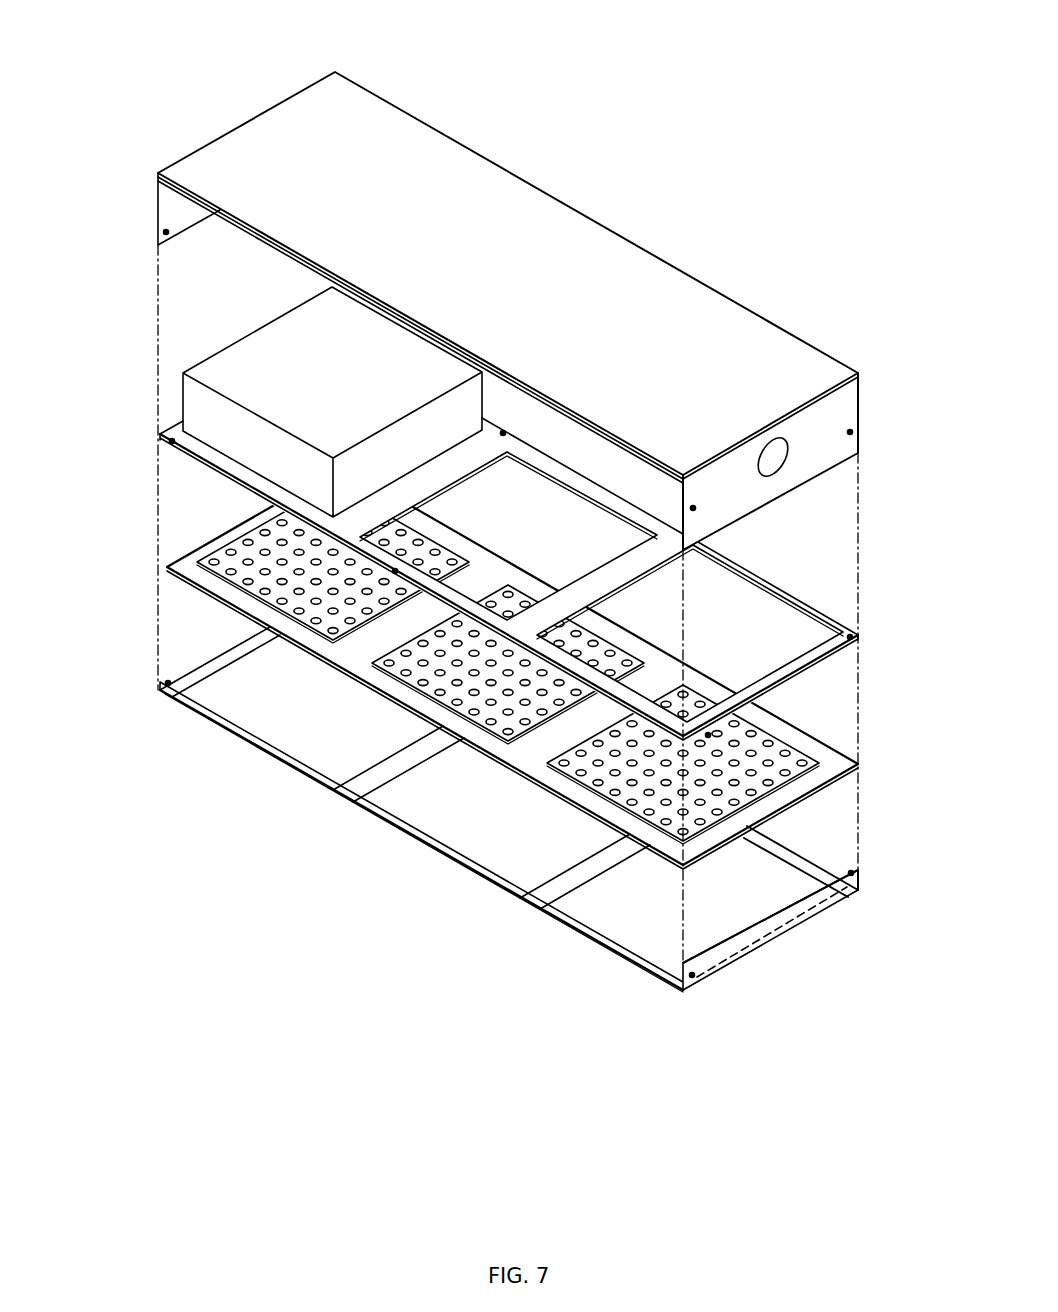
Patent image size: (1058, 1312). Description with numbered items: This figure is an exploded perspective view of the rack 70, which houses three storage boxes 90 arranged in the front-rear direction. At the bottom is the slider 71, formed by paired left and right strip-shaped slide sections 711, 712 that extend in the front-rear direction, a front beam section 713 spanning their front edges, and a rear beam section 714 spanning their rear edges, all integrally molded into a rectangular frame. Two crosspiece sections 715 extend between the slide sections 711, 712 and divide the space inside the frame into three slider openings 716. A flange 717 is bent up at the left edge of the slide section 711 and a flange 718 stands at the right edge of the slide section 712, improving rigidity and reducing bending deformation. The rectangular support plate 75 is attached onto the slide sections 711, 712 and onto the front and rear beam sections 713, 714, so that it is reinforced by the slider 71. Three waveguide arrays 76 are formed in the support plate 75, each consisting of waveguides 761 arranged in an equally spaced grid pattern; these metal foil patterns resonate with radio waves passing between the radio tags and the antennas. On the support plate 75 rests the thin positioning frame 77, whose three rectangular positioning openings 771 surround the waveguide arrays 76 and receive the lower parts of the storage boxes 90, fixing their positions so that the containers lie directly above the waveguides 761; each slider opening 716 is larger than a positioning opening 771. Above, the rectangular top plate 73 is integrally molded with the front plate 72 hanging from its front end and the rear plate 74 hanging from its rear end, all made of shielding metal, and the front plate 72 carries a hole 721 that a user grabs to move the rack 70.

The rack 70 is at (677, 90).
The slider 71 is at (158, 690).
The slide section 711 is at (603, 948).
The slide section 712 is at (800, 858).
The front beam section 713 is at (780, 940).
The rear beam section 714 is at (237, 655).
The crosspiece section 715 is at (348, 790).
The slider opening 716 is at (268, 725).
The flange 717 is at (548, 928).
The flange 718 is at (828, 868).
The front plate 72 is at (847, 412).
The hole 721 is at (773, 457).
The top plate 73 is at (643, 272).
The rear plate 74 is at (190, 222).
The support plate 75 is at (176, 568).
The waveguide array 76 is at (510, 665).
The waveguide 761 is at (242, 580).
The positioning frame 77 is at (178, 430).
The positioning opening 771 is at (565, 507).
The storage box 90 is at (350, 338).